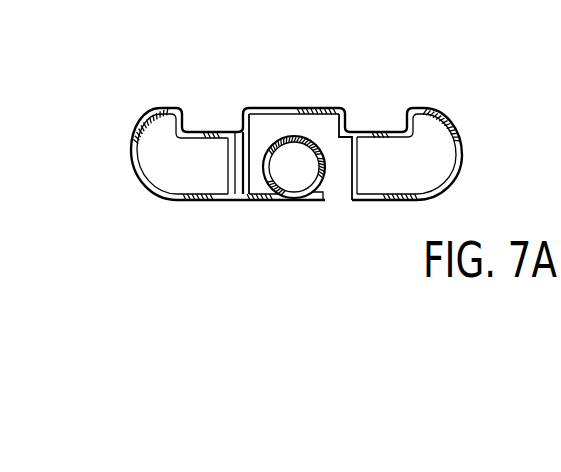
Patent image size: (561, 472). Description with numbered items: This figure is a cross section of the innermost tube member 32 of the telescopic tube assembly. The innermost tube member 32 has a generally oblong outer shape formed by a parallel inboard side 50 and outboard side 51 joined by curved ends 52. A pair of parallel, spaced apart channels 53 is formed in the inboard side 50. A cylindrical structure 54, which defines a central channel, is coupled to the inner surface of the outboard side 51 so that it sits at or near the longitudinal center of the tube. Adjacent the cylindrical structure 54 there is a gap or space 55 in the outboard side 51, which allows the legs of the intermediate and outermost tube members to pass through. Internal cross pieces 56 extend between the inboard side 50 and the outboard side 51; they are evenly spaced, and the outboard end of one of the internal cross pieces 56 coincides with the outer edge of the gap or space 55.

The innermost tube member 32 is at (435, 95).
The inboard side 50 is at (308, 107).
The outboard side 51 is at (277, 200).
The curved ends 52 is at (128, 157).
The channels 53 is at (213, 120).
The cylindrical structure 54 is at (294, 135).
The gap or space 55 is at (333, 196).
The internal cross pieces 56 is at (232, 160).